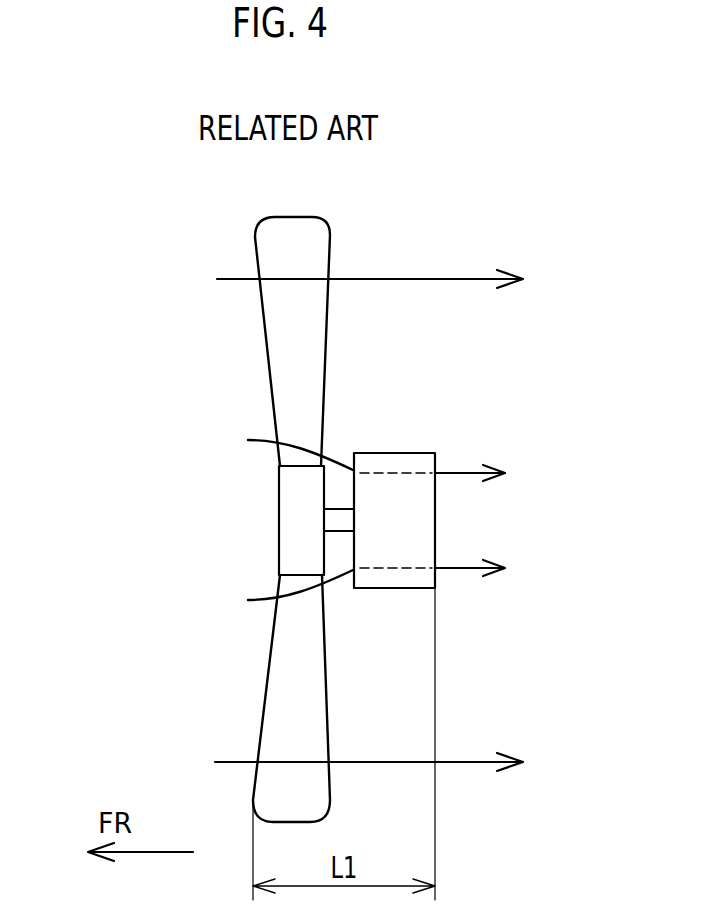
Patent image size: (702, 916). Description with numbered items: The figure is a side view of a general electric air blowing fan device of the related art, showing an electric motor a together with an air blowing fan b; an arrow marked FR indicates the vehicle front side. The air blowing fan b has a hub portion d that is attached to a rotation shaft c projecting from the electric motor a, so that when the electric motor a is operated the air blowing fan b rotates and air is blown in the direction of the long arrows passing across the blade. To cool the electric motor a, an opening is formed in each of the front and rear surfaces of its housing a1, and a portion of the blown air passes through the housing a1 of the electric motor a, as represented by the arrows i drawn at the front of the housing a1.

The electric motor a is at (433, 446).
The housing a1 is at (418, 514).
The air blowing fan b is at (348, 256).
The rotation shaft c is at (340, 515).
The hub portion d is at (290, 557).
The arrows i is at (463, 474).